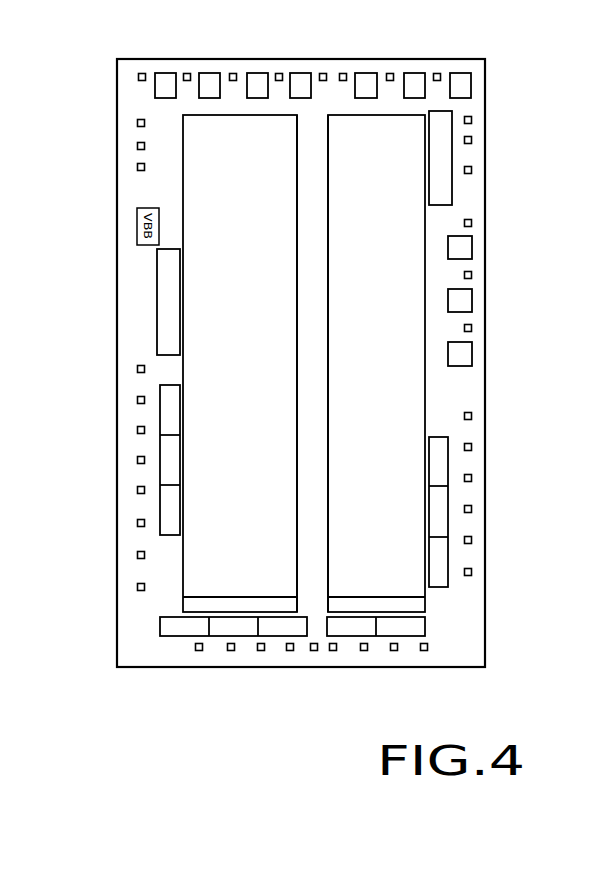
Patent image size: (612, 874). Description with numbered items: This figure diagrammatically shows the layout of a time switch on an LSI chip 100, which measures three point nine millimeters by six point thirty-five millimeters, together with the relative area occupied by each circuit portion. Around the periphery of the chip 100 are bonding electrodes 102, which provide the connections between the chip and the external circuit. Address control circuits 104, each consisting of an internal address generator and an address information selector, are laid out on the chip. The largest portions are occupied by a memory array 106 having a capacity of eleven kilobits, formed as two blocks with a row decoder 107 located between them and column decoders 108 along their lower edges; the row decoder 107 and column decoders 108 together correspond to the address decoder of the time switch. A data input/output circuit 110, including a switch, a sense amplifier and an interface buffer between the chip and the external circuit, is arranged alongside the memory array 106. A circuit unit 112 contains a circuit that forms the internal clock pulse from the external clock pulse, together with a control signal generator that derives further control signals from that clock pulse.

The chip 100 is at (130, 648).
The bonding electrodes 102 is at (187, 72).
The address control circuits 104 is at (210, 90).
The memory array 106 is at (255, 296).
The row decoder 107 is at (310, 207).
The column decoders 108 is at (273, 602).
The data input/output circuit 110 is at (172, 413).
The circuit unit 112 is at (157, 300).